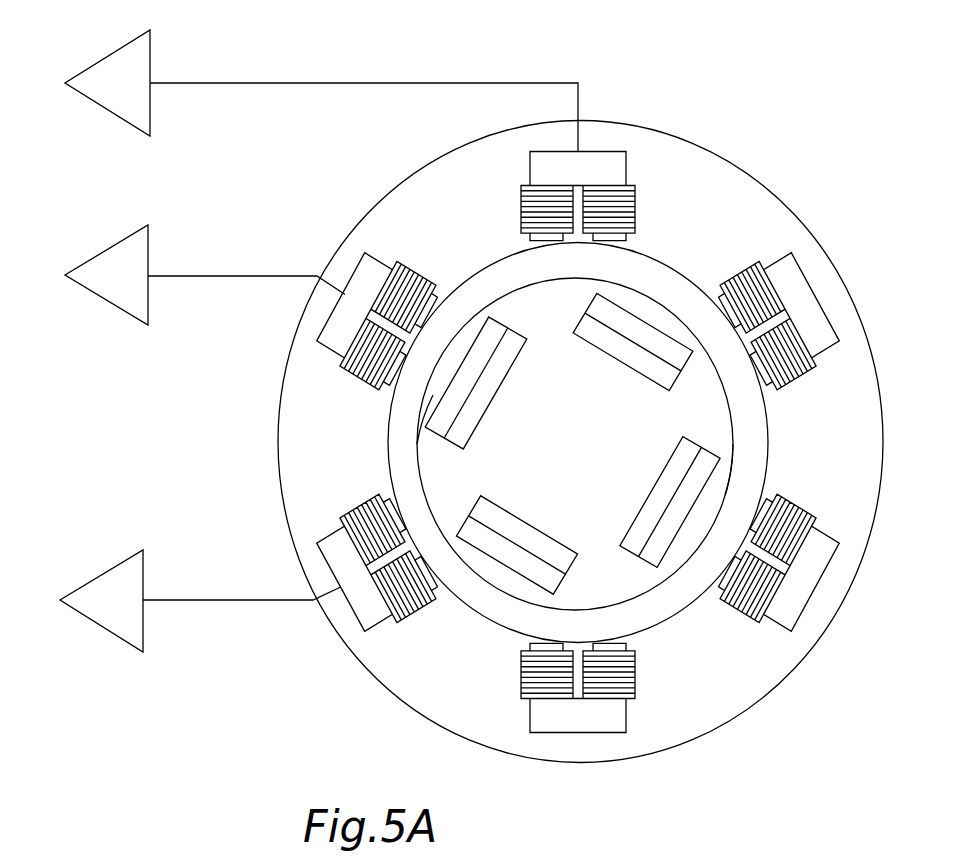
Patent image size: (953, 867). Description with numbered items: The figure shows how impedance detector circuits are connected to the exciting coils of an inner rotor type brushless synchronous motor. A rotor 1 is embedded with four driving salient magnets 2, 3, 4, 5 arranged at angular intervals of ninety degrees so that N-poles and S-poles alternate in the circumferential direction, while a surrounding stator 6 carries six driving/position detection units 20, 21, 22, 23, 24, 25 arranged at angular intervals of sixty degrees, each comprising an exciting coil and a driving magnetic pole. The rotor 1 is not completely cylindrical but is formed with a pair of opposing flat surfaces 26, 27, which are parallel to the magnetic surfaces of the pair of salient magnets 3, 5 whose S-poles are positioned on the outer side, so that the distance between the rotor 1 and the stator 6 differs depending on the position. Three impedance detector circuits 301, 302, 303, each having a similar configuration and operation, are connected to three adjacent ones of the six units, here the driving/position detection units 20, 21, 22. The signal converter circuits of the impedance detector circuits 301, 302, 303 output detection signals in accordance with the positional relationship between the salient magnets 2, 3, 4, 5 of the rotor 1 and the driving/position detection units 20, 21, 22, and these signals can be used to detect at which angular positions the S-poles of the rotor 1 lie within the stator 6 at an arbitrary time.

The rotor 1 is at (717, 420).
The driving salient magnet 2 is at (495, 557).
The driving salient magnet 3 is at (440, 437).
The driving salient magnet 4 is at (582, 323).
The driving salient magnet 5 is at (647, 566).
The stator 6 is at (703, 715).
The driving/position detection unit 20 is at (373, 628).
The driving/position detection unit 21 is at (326, 343).
The driving/position detection unit 22 is at (530, 168).
The driving/position detection unit 23 is at (773, 262).
The driving/position detection unit 24 is at (823, 532).
The driving/position detection unit 25 is at (624, 729).
The flat surface 26 is at (437, 410).
The flat surface 27 is at (723, 483).
The impedance detector circuit 301 is at (93, 618).
The impedance detector circuit 302 is at (93, 293).
The impedance detector circuit 303 is at (93, 102).